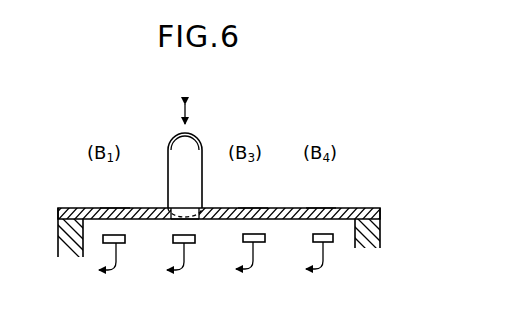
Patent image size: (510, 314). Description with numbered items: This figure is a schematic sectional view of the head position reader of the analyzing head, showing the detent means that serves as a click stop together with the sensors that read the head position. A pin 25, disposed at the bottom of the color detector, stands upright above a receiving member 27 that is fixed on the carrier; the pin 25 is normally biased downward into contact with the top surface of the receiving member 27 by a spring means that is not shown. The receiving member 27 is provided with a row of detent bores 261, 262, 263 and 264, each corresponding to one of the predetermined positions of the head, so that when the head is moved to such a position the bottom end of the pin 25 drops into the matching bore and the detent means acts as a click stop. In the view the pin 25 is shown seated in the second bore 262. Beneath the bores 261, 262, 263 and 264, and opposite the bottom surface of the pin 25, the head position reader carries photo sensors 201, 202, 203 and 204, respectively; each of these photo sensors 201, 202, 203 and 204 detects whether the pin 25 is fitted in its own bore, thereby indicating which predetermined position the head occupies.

The pin 25 is at (202, 161).
The receiving member 27 is at (357, 208).
The photo sensor 201 is at (125, 241).
The photo sensor 202 is at (173, 241).
The photo sensor 203 is at (265, 240).
The photo sensor 204 is at (333, 240).
The detent bore 261 is at (114, 208).
The detent bore 262 is at (188, 219).
The detent bore 263 is at (252, 208).
The detent bore 264 is at (321, 208).